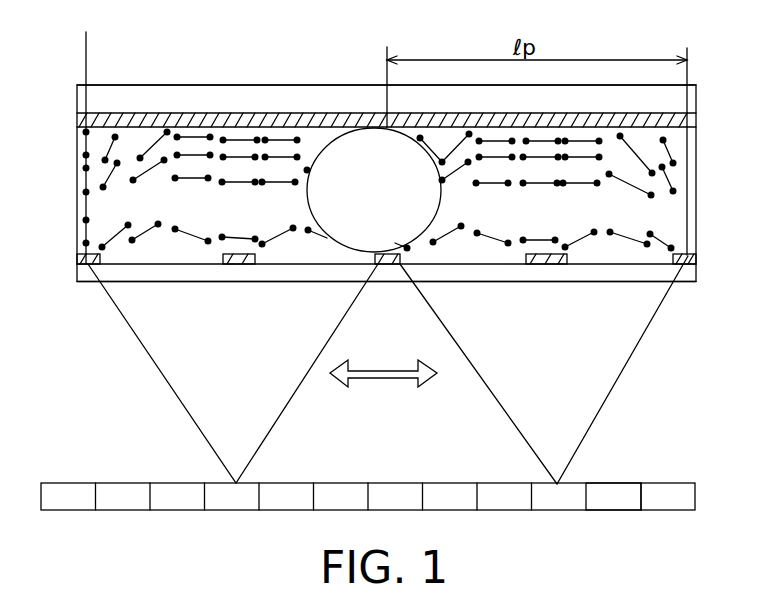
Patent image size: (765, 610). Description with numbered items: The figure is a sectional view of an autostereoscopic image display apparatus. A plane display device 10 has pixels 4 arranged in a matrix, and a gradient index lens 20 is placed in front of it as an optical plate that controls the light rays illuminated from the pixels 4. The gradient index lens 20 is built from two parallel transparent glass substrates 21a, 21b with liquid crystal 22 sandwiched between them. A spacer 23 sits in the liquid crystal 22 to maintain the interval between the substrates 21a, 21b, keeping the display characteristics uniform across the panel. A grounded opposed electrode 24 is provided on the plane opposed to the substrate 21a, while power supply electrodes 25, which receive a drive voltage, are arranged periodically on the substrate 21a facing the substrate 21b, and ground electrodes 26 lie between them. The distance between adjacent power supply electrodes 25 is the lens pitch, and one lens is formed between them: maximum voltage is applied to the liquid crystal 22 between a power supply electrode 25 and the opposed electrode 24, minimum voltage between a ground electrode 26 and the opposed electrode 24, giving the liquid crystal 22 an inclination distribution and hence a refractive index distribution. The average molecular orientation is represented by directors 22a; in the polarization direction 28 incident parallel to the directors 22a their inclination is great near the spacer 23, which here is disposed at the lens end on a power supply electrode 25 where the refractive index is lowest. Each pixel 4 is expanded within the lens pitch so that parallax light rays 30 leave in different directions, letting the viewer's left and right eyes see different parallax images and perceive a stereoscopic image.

The pixel 4 is at (613, 491).
The plane display device 10 is at (739, 506).
The gradient index lens 20 is at (736, 203).
The transparent substrate 21a is at (690, 282).
The transparent substrate 21b is at (670, 100).
The liquid crystal 22 is at (110, 199).
The director 22a is at (540, 145).
The spacer 23 is at (403, 150).
The opposed electrode 24 is at (183, 113).
The power supply electrode 25 is at (77, 256).
The ground electrode 26 is at (237, 264).
The polarization direction 28 is at (387, 379).
The parallax light ray 30 is at (480, 378).